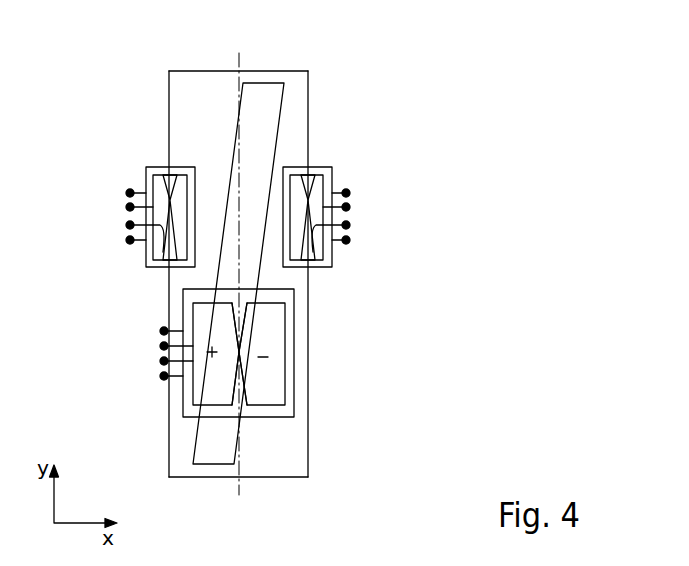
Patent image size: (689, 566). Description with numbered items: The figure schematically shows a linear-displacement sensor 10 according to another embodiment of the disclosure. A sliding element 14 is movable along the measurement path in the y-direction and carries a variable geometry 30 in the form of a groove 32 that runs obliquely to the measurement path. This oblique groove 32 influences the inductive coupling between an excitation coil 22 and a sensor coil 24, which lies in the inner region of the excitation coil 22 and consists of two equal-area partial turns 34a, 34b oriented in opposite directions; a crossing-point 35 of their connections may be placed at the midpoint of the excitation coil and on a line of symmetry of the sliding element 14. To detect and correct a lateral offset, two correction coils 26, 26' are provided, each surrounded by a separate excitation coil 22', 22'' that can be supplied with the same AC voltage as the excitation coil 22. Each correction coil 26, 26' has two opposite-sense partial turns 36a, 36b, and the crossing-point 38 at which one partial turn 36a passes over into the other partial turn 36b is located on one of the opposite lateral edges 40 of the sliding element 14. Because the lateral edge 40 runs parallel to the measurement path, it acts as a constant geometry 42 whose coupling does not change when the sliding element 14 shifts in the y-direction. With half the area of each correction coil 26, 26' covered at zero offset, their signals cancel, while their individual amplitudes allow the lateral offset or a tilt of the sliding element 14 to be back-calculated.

The linear-displacement sensor 10 is at (348, 80).
The sliding element 14 is at (197, 78).
The excitation coil 22 is at (269, 353).
The separate excitation coil 22' is at (339, 234).
The separate excitation coil 22'' is at (137, 232).
The sensor coil 24 is at (294, 330).
The correction coil 26 is at (343, 223).
The correction coil 26' is at (133, 223).
The variable geometry 30 is at (253, 105).
The groove 32 is at (273, 88).
The partial turn 34a is at (210, 392).
The partial turn 34b is at (264, 397).
The crossing-point 35 is at (239, 352).
The partial turn 36a is at (153, 178).
The partial turn 36b is at (180, 207).
The crossing-point 38 is at (166, 261).
The lateral edge 40 is at (169, 137).
The constant geometry 42 is at (130, 112).